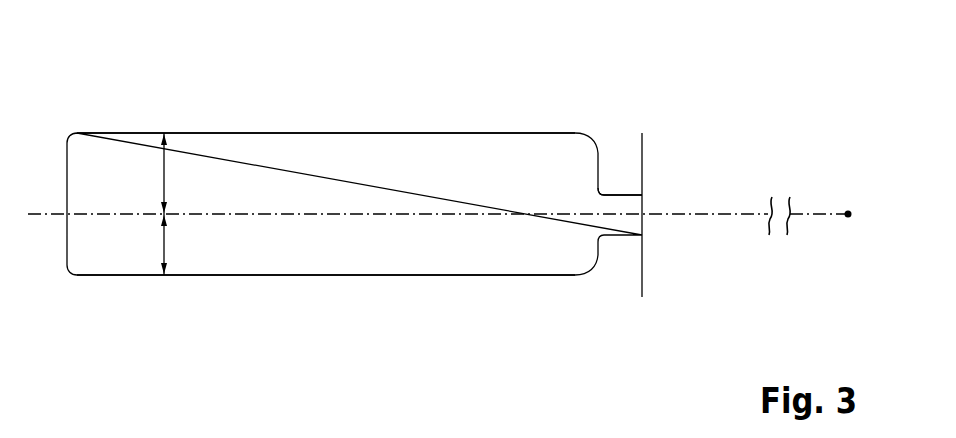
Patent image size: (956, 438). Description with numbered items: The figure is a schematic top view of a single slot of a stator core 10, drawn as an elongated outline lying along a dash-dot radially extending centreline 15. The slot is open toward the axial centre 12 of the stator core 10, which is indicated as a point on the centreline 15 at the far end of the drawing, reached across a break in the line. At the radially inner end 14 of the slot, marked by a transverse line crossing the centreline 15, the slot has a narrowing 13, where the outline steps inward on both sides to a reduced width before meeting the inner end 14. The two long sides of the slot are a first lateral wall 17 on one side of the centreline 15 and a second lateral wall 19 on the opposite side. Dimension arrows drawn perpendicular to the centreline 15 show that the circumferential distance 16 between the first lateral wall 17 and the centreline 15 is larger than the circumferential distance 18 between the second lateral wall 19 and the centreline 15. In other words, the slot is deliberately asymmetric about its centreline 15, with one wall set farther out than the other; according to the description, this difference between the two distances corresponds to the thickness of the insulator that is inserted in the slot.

The stator core 10 is at (620, 255).
The axial centre 12 is at (849, 200).
The narrowing 13 is at (618, 200).
The radially inner end 14 is at (660, 235).
The centreline 15 is at (734, 215).
The circumferential distance 16 is at (170, 172).
The first lateral wall 17 is at (428, 125).
The circumferential distance 18 is at (286, 288).
The second lateral wall 19 is at (170, 242).